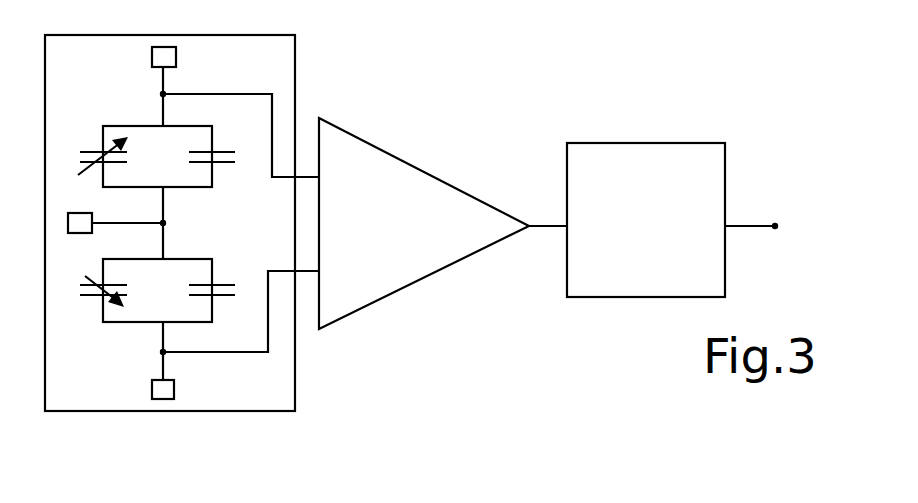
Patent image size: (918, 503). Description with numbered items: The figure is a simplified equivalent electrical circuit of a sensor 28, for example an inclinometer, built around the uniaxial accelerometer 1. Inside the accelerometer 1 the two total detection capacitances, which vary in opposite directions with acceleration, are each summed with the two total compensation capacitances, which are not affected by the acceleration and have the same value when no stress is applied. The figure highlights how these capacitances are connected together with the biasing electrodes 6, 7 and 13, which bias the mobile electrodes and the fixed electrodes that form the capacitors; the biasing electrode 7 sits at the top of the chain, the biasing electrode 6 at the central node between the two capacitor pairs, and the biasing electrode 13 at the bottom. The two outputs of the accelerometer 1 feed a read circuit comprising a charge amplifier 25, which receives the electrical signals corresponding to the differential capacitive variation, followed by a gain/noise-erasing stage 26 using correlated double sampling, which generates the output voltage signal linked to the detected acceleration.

The uniaxial accelerometer 1 is at (220, 215).
The biasing electrode 7 is at (152, 59).
The biasing electrode 6 is at (70, 216).
The biasing electrode 13 is at (152, 388).
The charge amplifier 25 is at (448, 257).
The gain/noise-erasing stage 26 is at (612, 282).
The sensor 28 is at (520, 122).